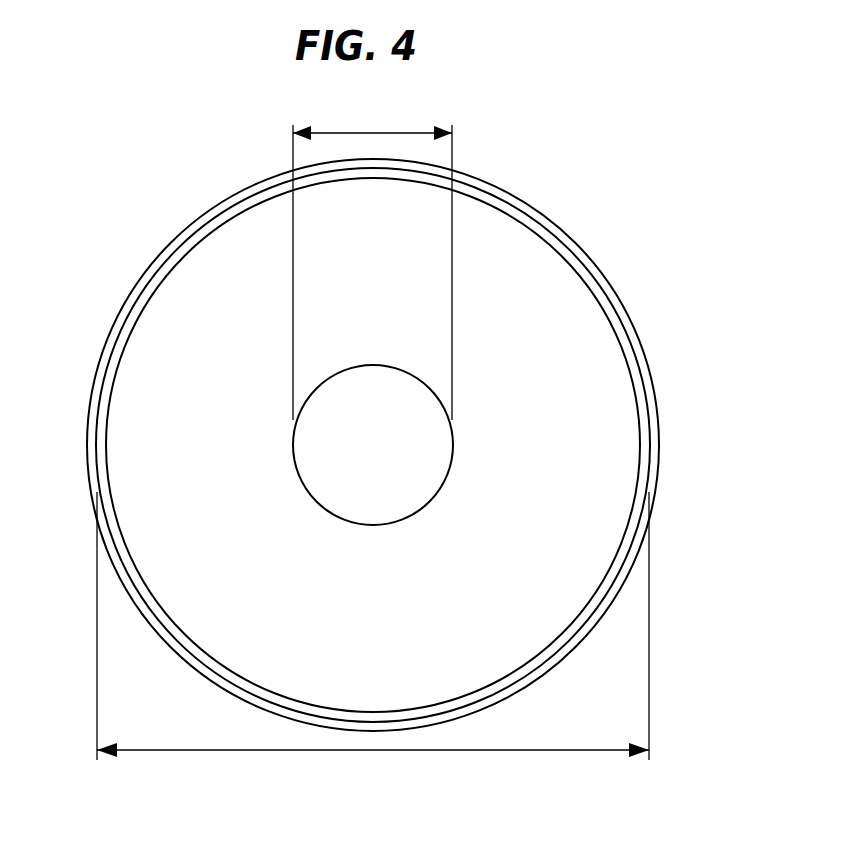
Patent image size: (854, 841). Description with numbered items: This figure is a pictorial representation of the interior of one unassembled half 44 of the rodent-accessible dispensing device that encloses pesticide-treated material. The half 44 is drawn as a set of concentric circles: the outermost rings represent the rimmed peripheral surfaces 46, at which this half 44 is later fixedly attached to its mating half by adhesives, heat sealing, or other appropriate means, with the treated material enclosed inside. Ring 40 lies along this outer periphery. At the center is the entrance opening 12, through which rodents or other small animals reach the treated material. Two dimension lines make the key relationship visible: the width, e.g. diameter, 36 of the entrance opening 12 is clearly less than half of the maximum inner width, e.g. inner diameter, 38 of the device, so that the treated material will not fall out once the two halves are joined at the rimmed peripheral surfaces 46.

The entrance opening 12 is at (432, 448).
The width of entrance opening 36 is at (368, 133).
The maximum inner width 38 is at (287, 751).
The outer ring 40 is at (657, 395).
The half 44 is at (643, 293).
The rimmed peripheral surface 46 is at (102, 402).